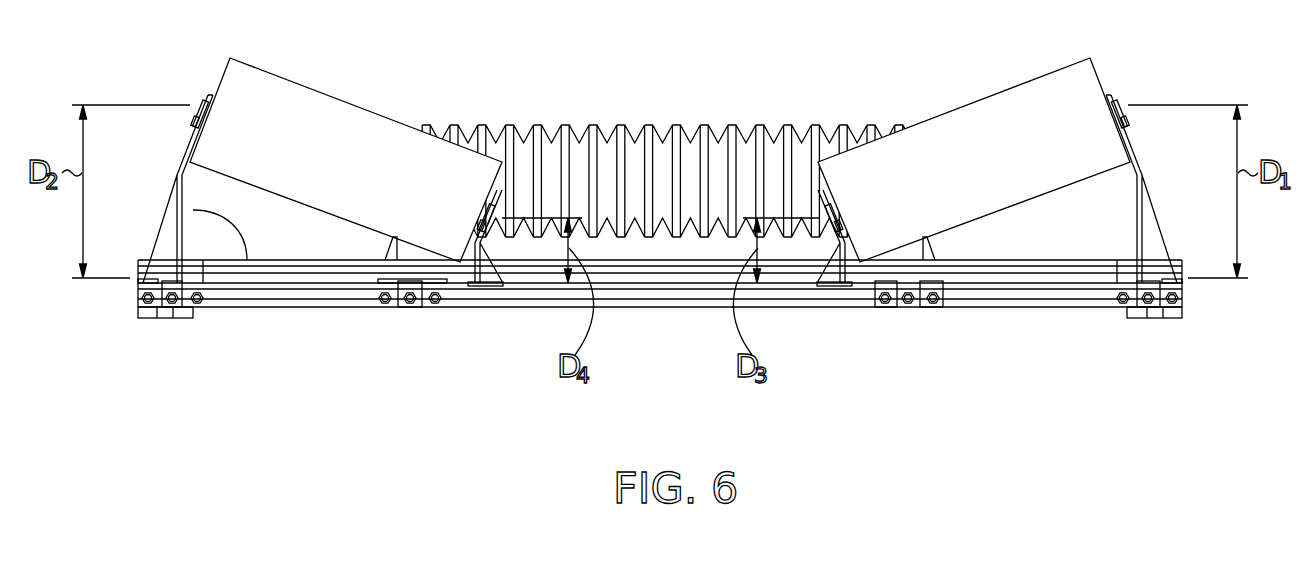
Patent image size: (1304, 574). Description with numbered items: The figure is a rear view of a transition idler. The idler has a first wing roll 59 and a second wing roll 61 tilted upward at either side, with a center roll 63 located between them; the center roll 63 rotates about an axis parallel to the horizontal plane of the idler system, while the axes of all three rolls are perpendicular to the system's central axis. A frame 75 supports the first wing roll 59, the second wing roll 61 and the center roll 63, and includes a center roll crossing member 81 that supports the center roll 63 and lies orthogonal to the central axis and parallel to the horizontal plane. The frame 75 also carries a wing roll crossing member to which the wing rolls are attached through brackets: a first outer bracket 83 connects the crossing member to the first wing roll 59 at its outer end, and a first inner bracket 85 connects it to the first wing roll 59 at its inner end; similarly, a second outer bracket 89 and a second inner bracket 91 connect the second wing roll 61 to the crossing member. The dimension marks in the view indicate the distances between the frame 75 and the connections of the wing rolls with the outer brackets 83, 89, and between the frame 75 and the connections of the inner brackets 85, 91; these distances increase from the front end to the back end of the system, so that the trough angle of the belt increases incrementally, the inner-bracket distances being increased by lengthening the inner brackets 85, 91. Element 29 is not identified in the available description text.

The base rail 29 is at (672, 306).
The first wing roll 59 is at (1033, 77).
The second wing roll 61 is at (290, 80).
The center roll 63 is at (671, 124).
The frame 75 is at (276, 313).
The center roll crossing member 81 is at (193, 210).
The first outer bracket 83 is at (1138, 227).
The first inner bracket 85 is at (845, 270).
The second outer bracket 89 is at (180, 172).
The second inner bracket 91 is at (470, 262).